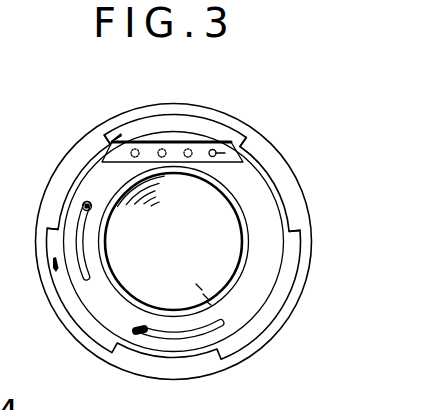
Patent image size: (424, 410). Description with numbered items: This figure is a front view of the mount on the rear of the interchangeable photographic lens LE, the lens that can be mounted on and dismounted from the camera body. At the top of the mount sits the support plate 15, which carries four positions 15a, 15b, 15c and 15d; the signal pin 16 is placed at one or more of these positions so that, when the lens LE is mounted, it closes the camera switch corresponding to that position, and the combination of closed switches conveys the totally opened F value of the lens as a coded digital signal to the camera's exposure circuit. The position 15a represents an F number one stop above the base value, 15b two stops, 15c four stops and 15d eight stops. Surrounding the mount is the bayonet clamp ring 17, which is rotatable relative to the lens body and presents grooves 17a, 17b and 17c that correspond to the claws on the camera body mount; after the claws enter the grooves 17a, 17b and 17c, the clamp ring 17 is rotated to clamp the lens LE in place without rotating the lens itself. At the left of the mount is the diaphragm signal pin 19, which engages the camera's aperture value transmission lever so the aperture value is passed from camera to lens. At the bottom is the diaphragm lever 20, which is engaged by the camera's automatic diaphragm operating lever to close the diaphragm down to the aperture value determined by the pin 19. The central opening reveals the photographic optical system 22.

The photographic lens LE is at (84, 114).
The support plate 15 is at (216, 148).
The position on the support plate 15a is at (246, 157).
The position on the support plate 15b is at (188, 147).
The position on the support plate 15c is at (162, 147).
The position on the support plate 15d is at (134, 148).
The signal pin 16 is at (247, 131).
The bayonet clamp ring 17 is at (294, 192).
The groove 17a is at (103, 146).
The groove 17b is at (62, 288).
The groove 17c is at (277, 304).
The diaphragm signal pin 19 is at (82, 207).
The diaphragm lever 20 is at (140, 336).
The photographic optical system 22 is at (219, 287).